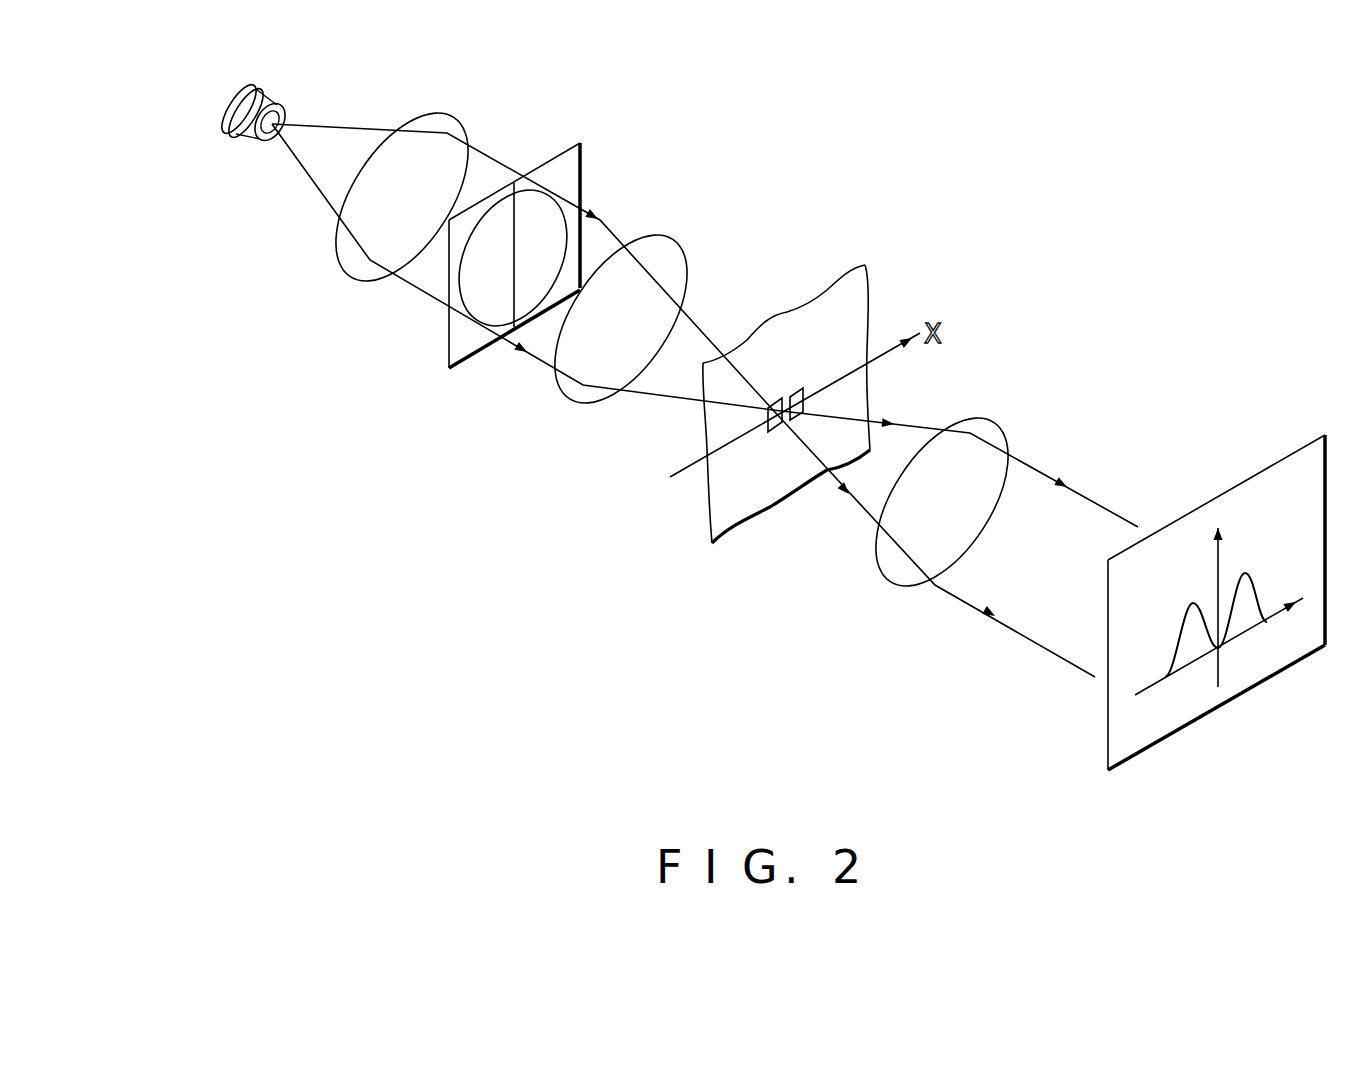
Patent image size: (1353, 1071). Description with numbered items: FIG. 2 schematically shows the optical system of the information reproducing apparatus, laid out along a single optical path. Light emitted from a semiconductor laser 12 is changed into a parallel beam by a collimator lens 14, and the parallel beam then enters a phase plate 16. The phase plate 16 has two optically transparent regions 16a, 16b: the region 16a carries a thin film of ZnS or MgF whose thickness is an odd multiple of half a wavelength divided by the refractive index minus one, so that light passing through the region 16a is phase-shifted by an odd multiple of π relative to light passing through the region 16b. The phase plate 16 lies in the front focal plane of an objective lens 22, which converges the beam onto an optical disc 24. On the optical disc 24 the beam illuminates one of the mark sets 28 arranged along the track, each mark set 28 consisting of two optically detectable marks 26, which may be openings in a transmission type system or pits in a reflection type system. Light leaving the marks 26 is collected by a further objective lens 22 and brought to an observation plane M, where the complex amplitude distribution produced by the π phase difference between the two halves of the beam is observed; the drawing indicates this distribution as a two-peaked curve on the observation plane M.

The semiconductor laser 12 is at (272, 104).
The collimator lens 14 is at (467, 126).
The phase plate 16 is at (519, 237).
The region 16a is at (448, 340).
The region 16b is at (583, 182).
The objective lens 22 is at (673, 248).
The optical disc 24 is at (870, 300).
The mark 26 is at (778, 432).
The mark set 28 is at (799, 493).
The observation plane M is at (1237, 478).